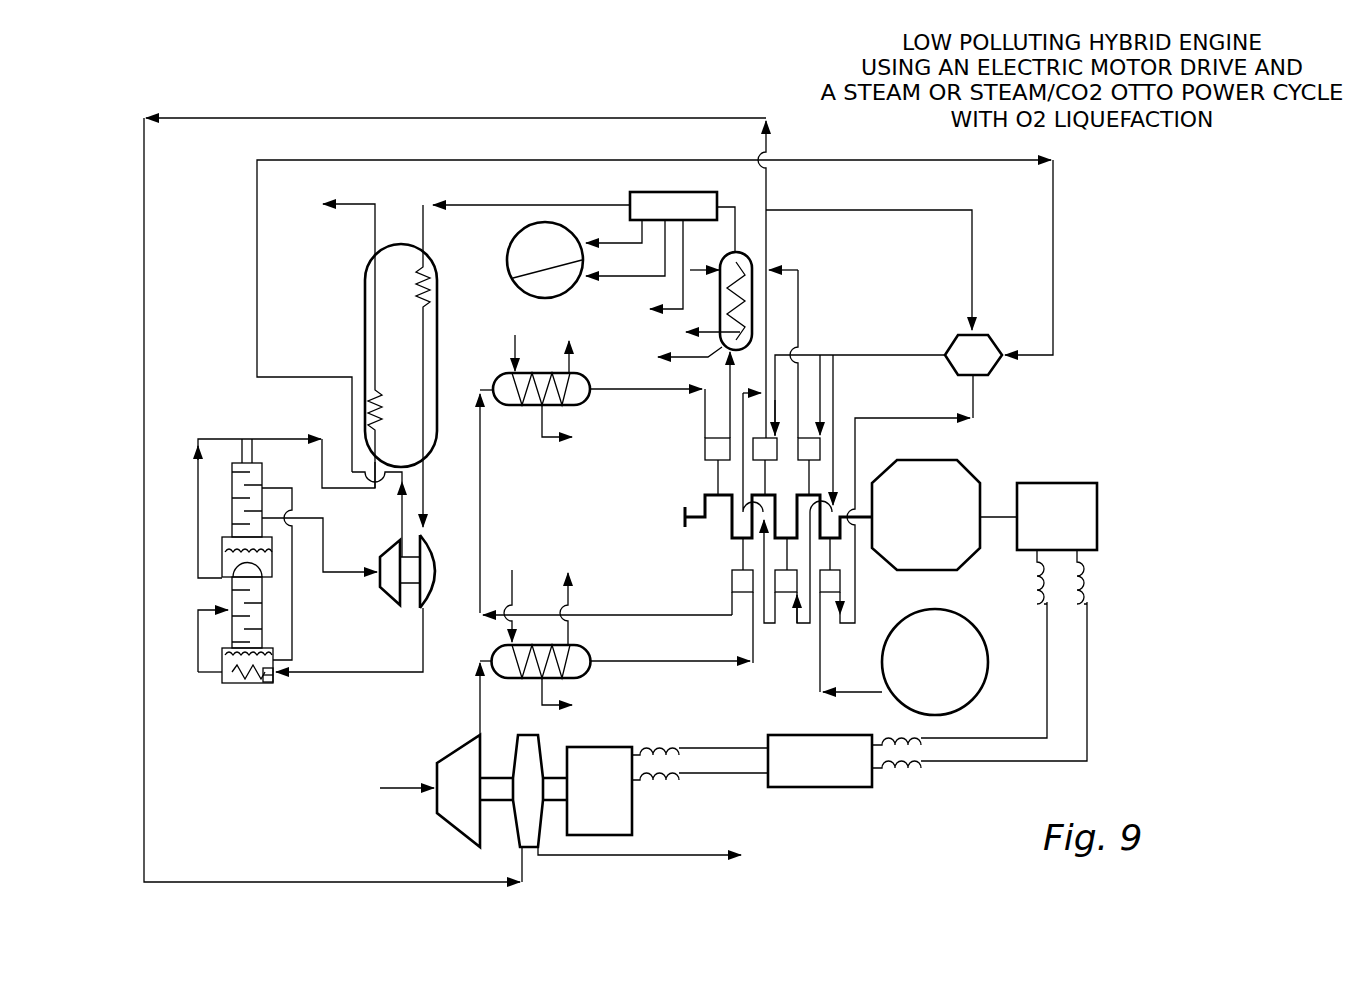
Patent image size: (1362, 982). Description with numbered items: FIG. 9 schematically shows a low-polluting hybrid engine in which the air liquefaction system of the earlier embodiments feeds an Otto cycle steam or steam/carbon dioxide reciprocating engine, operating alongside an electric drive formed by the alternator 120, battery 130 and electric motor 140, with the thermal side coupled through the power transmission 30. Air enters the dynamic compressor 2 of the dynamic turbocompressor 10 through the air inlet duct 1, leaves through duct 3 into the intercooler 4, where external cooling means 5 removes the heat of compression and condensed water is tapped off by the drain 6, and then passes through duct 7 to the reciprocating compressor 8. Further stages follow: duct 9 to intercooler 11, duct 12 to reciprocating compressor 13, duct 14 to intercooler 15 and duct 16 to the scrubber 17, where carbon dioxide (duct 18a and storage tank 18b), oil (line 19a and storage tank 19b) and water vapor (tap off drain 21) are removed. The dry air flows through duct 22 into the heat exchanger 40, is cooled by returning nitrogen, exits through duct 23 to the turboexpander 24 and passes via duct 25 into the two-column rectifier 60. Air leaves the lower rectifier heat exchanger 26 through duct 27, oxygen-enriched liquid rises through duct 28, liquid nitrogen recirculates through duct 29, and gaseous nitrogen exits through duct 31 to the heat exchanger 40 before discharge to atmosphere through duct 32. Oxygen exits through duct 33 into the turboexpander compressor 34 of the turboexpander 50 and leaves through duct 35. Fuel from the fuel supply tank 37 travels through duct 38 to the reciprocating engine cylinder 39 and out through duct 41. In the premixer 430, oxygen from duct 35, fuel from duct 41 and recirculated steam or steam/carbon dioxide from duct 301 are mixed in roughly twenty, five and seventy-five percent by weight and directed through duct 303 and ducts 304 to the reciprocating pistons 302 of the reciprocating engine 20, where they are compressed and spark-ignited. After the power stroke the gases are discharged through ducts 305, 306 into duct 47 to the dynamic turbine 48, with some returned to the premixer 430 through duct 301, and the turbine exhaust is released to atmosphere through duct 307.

The air inlet duct 1 is at (416, 783).
The dynamic compressor 2 is at (447, 823).
The duct 3 is at (480, 700).
The intercooler 4 is at (590, 676).
The external cooling means 5 is at (573, 357).
The drain 6 is at (556, 440).
The duct 7 is at (668, 662).
The reciprocating compressor 8 is at (732, 578).
The duct 9 is at (483, 520).
The dynamic turbocompressor 10 is at (445, 735).
The intercooler 11 is at (548, 372).
The duct 12 is at (650, 390).
The reciprocating compressor 13 is at (706, 448).
The duct 14 is at (728, 395).
The intercooler 15 is at (722, 258).
The duct 16 is at (735, 205).
The scrubber 17 is at (672, 191).
The duct 18a is at (615, 243).
The storage tank 18b is at (520, 240).
The line 19a is at (633, 276).
The storage tank 19b is at (553, 296).
The reciprocating engine 20 is at (696, 498).
The tap off drain 21 is at (665, 308).
The duct 22 is at (563, 204).
The duct 23 is at (425, 510).
The turboexpander 24 is at (438, 559).
The duct 25 is at (332, 673).
The lower rectifier heat exchanger 26 is at (280, 688).
The duct 27 is at (196, 635).
The duct 28 is at (295, 612).
The duct 29 is at (246, 440).
The power transmission 30 is at (959, 455).
The duct 31 is at (316, 440).
The duct 32 is at (362, 200).
The duct 33 is at (293, 516).
The turboexpander compressor 34 is at (378, 560).
The duct 35 is at (400, 520).
The fuel supply tank 37 is at (942, 610).
The duct 38 is at (822, 655).
The reciprocating engine cylinder 39 is at (842, 590).
The heat exchanger 40 is at (363, 300).
The duct 41 is at (902, 418).
The duct 47 is at (470, 118).
The dynamic turbine 48 is at (515, 822).
The turboexpander 50 is at (396, 607).
The rectifier 60 is at (250, 692).
The alternator 120 is at (649, 814).
The battery 130 is at (834, 798).
The electric motor 140 is at (1058, 482).
The duct 301 is at (850, 210).
The reciprocating pistons 302 is at (822, 448).
The duct 303 is at (945, 355).
The ducts 304 is at (828, 403).
The duct 305 is at (798, 306).
The duct 306 is at (768, 265).
The duct 307 is at (655, 855).
The premixer 430 is at (1002, 379).